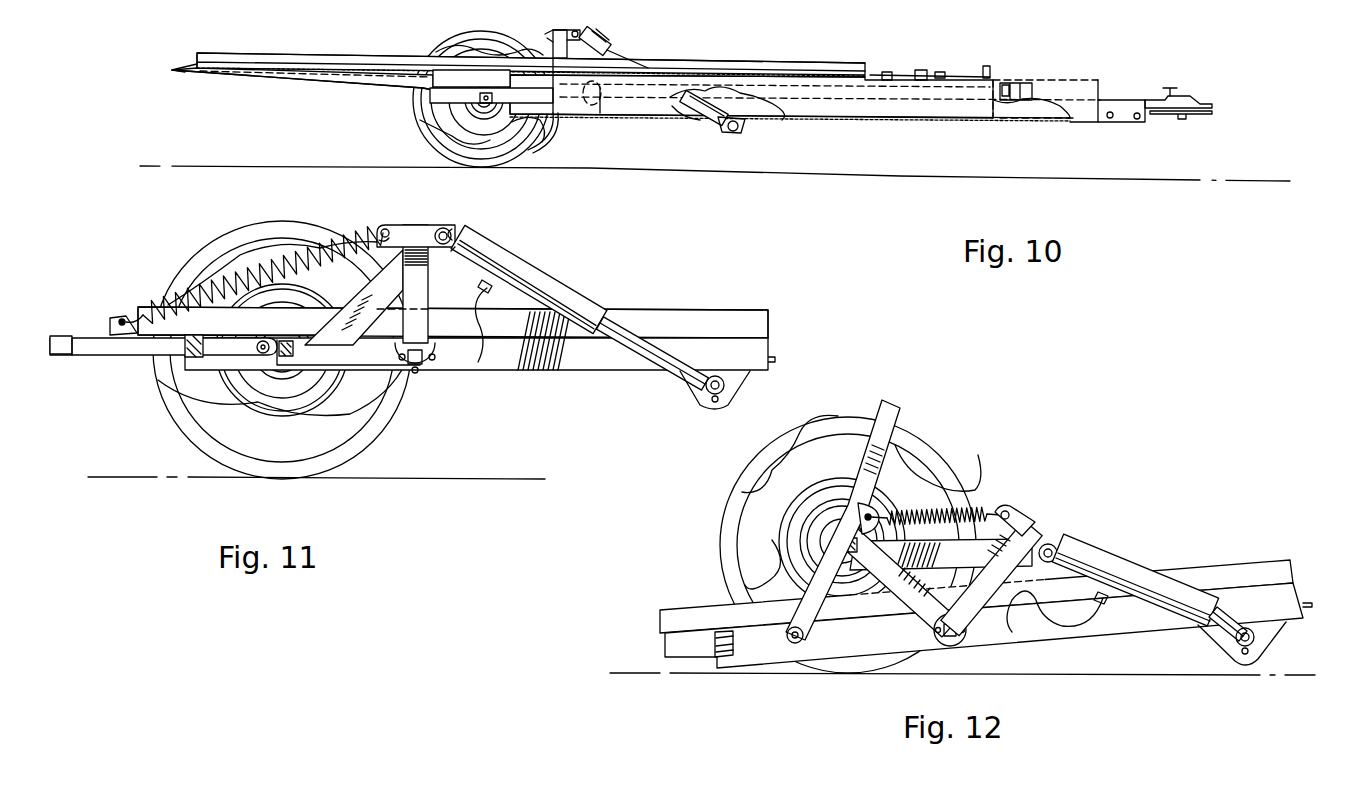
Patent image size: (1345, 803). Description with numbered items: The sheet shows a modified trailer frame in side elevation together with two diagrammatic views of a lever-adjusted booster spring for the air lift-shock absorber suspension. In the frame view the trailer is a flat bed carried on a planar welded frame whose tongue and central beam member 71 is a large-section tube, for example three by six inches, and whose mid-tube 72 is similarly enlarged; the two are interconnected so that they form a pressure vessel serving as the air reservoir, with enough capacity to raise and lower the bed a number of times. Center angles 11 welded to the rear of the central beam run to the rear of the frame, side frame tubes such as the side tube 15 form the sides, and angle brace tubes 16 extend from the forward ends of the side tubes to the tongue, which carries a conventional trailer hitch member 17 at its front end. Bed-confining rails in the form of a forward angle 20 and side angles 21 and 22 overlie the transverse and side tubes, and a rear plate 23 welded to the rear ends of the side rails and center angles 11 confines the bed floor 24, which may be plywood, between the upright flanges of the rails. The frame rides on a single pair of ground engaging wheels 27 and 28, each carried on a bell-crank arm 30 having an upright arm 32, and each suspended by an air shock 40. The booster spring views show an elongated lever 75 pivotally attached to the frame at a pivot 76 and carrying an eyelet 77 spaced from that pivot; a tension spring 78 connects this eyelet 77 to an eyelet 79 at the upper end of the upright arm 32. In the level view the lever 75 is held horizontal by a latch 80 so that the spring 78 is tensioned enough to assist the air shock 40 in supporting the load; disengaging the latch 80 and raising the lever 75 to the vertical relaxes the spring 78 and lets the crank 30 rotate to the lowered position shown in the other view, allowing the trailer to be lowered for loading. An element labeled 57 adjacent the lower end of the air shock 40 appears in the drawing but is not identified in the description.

In FIG. 10, the center angles 11 is at (353, 80).
In FIG. 11, the side frame tube 15 is at (592, 363).
In FIG. 12, the side frame tube 15 is at (782, 647).
In FIG. 10, the angle brace tubes 16 is at (1025, 78).
In FIG. 10, the trailer hitch member 17 is at (1180, 108).
In FIG. 10, the forward angle rail 20 is at (878, 70).
In FIG. 10, the side angle rail 21 is at (692, 64).
In FIG. 11, the side angle rail 22 is at (715, 320).
In FIG. 12, the side angle rail 22 is at (1217, 568).
In FIG. 10, the rear plate 23 is at (180, 68).
In FIG. 10, the bed floor 24 is at (300, 60).
In FIG. 10, the ground engaging wheel 27 is at (433, 95).
In FIG. 11, the ground engaging wheel 27 is at (180, 287).
In FIG. 12, the ground engaging wheel 27 is at (842, 437).
In FIG. 10, the right wheel 28 is at (516, 148).
In FIG. 11, the right wheel 28 is at (353, 424).
In FIG. 12, the right wheel 28 is at (757, 492).
In FIG. 10, the crank arm 30 is at (560, 28).
In FIG. 11, the crank arm 30 is at (440, 302).
In FIG. 12, the crank arm 30 is at (1050, 525).
In FIG. 11, the upright arm 32 is at (428, 290).
In FIG. 12, the upright arm 32 is at (987, 641).
In FIG. 10, the air shock 40 is at (601, 35).
In FIG. 11, the air shock 40 is at (579, 276).
In FIG. 12, the air shock 40 is at (1122, 559).
In FIG. 11, the cylinder anchor pivot 57 is at (731, 383).
In FIG. 10, the tongue and central beam member 71 is at (1088, 86).
In FIG. 10, the mid-tube 72 is at (557, 121).
In FIG. 11, the elongated lever 75 is at (98, 348).
In FIG. 12, the elongated lever 75 is at (890, 405).
In FIG. 11, the pivot 76 is at (263, 342).
In FIG. 11, the lever eyelet 77 is at (118, 318).
In FIG. 12, the lever eyelet 77 is at (862, 512).
In FIG. 11, the tension spring 78 is at (287, 256).
In FIG. 12, the tension spring 78 is at (985, 506).
In FIG. 11, the crank arm eyelet 79 is at (388, 228).
In FIG. 12, the crank arm eyelet 79 is at (1015, 520).
In FIG. 11, the latch 80 is at (190, 348).
In FIG. 12, the latch 80 is at (718, 641).